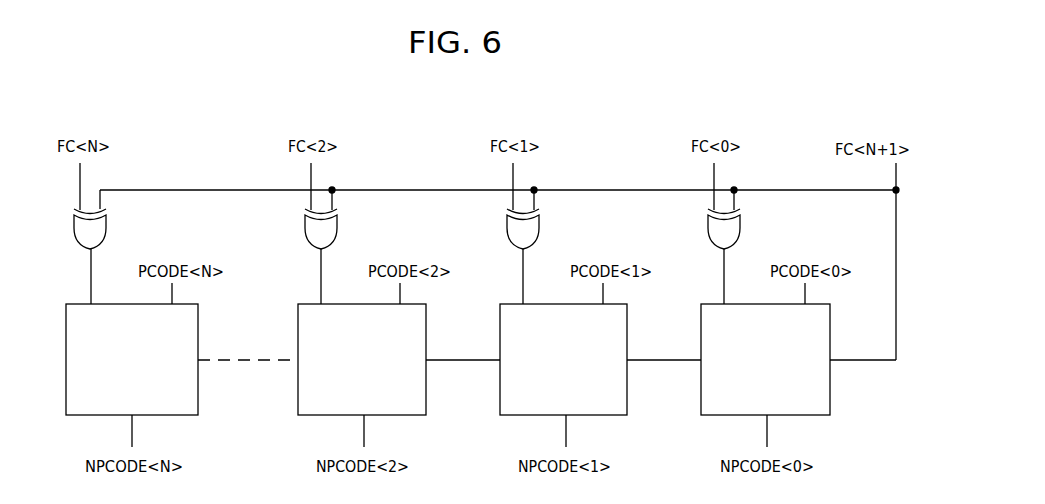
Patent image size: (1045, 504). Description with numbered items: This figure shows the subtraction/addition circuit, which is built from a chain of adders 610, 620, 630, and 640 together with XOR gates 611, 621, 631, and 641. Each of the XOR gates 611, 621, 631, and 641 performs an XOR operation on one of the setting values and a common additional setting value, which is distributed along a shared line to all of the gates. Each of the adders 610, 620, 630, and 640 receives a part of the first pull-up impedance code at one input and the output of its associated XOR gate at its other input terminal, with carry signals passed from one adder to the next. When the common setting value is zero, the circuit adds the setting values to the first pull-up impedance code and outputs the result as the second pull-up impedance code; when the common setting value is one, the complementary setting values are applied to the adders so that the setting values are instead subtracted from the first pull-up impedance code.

The adder 610 is at (198, 316).
The adder 620 is at (426, 316).
The adder 630 is at (627, 316).
The adder 640 is at (830, 316).
The XOR gate 611 is at (107, 232).
The XOR gate 621 is at (338, 232).
The XOR gate 631 is at (540, 232).
The XOR gate 641 is at (741, 232).